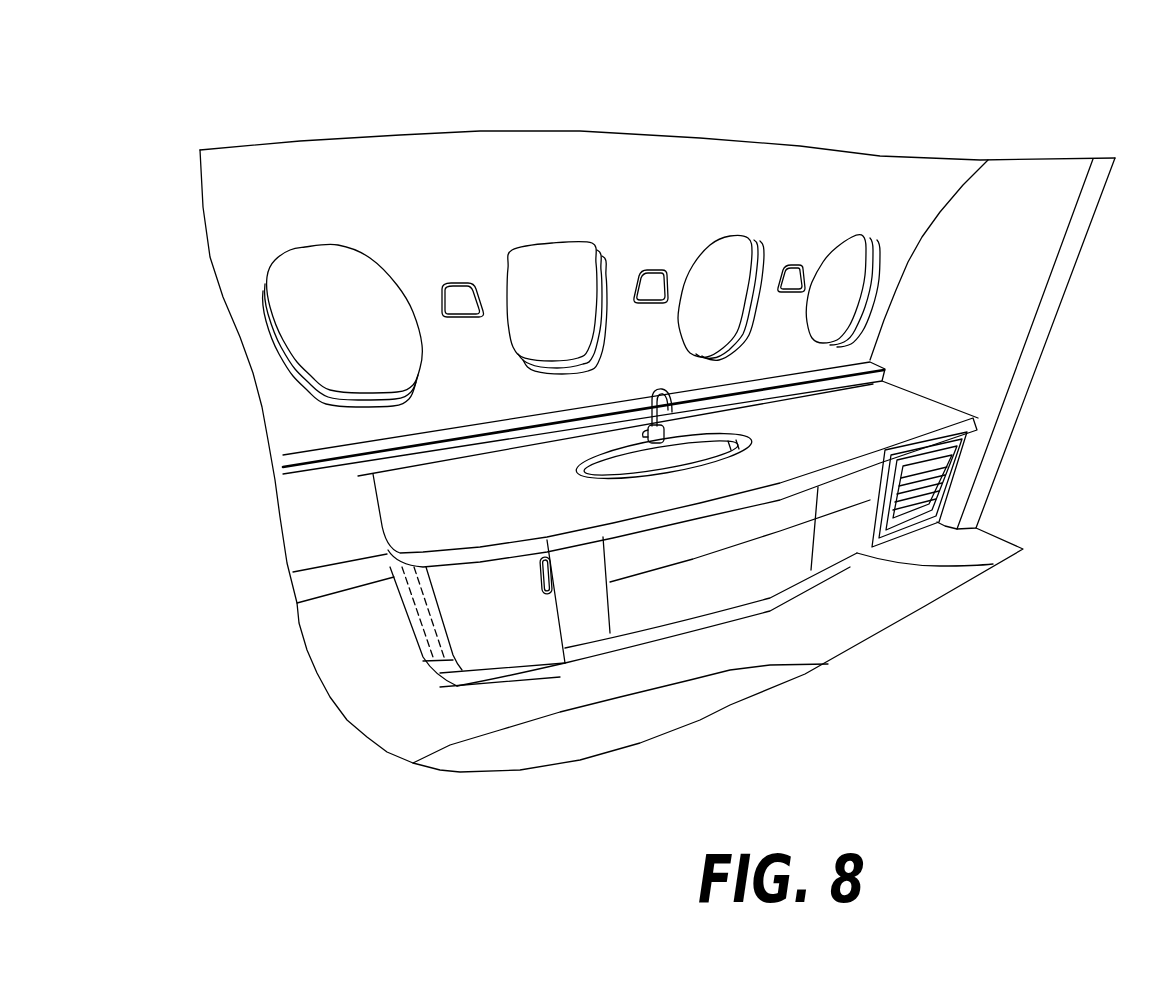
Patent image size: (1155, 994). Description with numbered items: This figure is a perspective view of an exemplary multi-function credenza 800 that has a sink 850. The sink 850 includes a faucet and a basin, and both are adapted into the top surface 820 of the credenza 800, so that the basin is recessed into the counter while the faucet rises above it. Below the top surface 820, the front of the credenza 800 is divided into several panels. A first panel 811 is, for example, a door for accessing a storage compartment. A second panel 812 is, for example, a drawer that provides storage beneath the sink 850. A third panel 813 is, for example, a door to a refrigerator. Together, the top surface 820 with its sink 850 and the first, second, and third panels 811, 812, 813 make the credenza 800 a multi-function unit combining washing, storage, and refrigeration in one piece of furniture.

The multi-function credenza 800 is at (300, 100).
The first panel 811 is at (477, 637).
The second panel 812 is at (692, 593).
The third panel 813 is at (910, 520).
The top surface 820 is at (392, 513).
The sink 850 is at (656, 389).